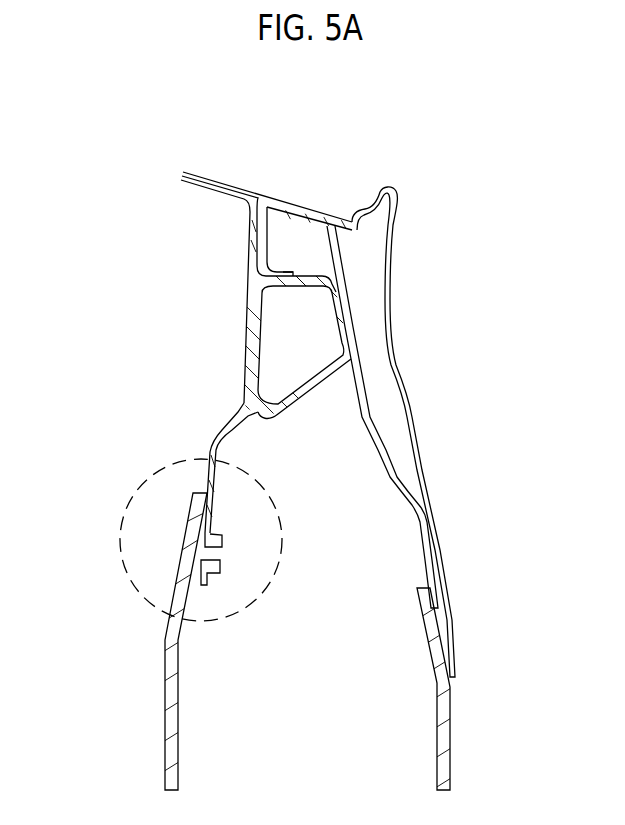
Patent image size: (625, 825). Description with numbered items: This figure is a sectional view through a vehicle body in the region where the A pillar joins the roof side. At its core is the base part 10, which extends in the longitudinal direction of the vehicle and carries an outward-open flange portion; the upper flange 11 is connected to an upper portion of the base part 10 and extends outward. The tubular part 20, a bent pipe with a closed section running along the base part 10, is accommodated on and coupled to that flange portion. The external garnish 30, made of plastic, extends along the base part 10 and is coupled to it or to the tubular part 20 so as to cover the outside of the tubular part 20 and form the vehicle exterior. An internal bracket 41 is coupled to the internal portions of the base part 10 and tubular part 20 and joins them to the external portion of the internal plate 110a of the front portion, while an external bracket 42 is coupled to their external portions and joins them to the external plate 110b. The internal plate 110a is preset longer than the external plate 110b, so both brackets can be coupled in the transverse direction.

The base part 10 is at (250, 327).
The upper flange 11 is at (262, 229).
The tubular part 20 is at (316, 382).
The external garnish 30 is at (392, 242).
The internal bracket 41 is at (223, 427).
The external bracket 42 is at (337, 272).
The internal plate 110a is at (165, 737).
The external plate 110b is at (450, 738).